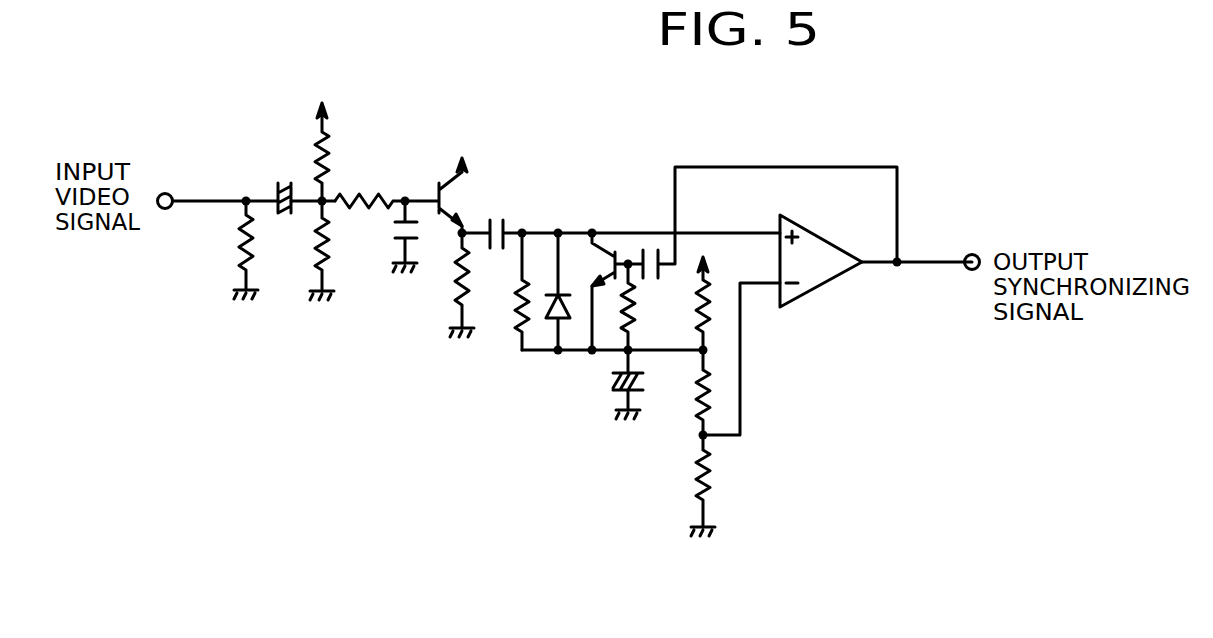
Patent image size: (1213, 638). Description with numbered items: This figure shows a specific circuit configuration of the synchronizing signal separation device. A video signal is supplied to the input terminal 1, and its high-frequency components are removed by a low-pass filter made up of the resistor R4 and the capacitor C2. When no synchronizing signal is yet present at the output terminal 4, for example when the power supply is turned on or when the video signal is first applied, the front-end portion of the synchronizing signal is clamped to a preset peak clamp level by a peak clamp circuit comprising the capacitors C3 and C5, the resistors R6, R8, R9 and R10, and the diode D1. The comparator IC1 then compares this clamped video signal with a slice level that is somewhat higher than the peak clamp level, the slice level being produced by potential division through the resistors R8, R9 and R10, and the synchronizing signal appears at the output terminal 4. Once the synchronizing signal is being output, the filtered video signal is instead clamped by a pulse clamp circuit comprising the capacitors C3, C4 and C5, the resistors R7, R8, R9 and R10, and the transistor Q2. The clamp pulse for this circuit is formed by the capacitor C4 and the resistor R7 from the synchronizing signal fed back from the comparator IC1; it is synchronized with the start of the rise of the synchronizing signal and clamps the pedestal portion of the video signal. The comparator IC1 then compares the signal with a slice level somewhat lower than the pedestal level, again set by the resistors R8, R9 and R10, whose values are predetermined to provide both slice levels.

The input terminal 1 is at (169, 193).
The output terminal 4 is at (976, 254).
The resistor R4 is at (370, 184).
The capacitor C2 is at (384, 236).
The capacitor C3 is at (492, 221).
The transistor Q2 is at (601, 274).
The capacitor C4 is at (762, 222).
The comparator IC1 is at (876, 252).
The resistor R6 is at (503, 291).
The diode D1 is at (555, 309).
The resistor R7 is at (648, 307).
The resistor R8 is at (686, 305).
The resistor R9 is at (685, 392).
The resistor R10 is at (681, 485).
The capacitor C5 is at (624, 402).